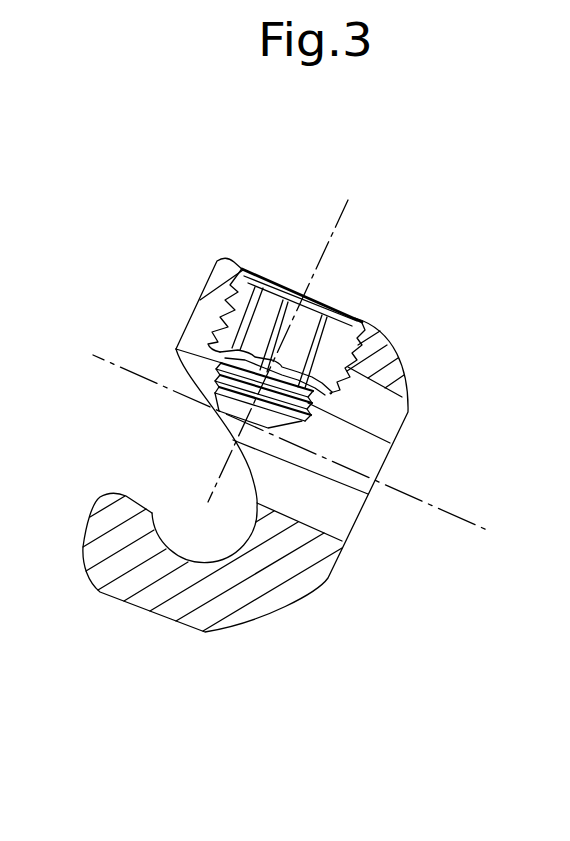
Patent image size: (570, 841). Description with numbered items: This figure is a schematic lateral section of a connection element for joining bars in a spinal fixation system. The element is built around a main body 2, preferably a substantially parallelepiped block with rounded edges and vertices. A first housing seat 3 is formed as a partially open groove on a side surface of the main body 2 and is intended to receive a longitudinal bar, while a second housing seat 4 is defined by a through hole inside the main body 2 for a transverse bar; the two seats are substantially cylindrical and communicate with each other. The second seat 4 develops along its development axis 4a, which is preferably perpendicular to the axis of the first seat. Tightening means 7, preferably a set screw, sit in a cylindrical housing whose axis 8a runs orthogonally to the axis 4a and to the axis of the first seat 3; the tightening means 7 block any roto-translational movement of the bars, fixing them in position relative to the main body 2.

The main body 2 is at (288, 610).
The first housing seat 3 is at (207, 534).
The second housing seat 4 is at (356, 327).
The development axis of the second seat 4a is at (463, 518).
The tightening means 7 is at (347, 335).
The axis of housing 8a is at (338, 222).